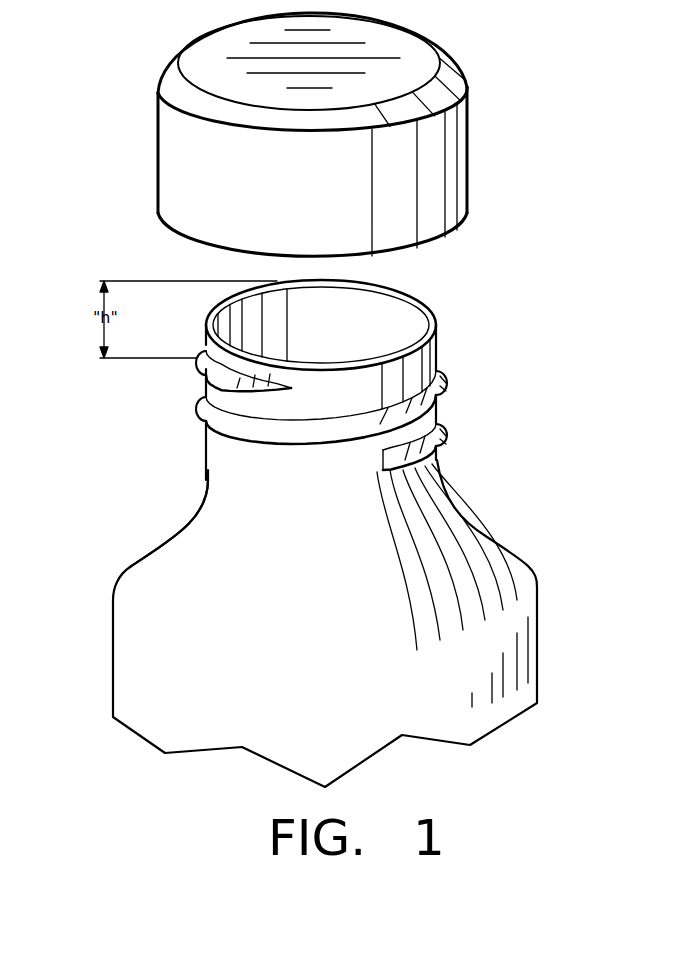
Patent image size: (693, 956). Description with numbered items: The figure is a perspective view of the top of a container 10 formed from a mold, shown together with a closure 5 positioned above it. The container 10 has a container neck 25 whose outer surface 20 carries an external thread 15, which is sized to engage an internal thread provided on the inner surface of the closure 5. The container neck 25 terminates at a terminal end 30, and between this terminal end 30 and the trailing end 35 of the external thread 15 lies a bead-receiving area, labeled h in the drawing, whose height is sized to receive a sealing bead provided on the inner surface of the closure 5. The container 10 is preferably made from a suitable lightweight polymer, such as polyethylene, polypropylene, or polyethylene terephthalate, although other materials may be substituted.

The closure 5 is at (487, 50).
The container 10 is at (542, 512).
The external thread 15 is at (442, 402).
The outer surface 20 is at (415, 365).
The container neck 25 is at (232, 453).
The terminal end 30 is at (437, 308).
The trailing end 35 is at (198, 376).